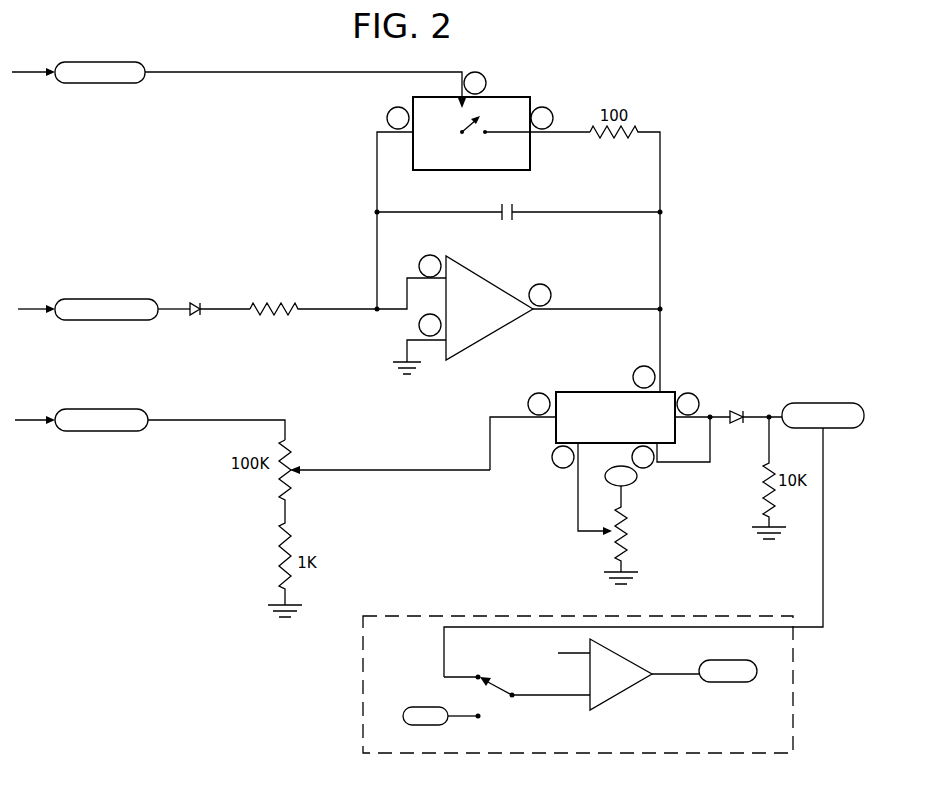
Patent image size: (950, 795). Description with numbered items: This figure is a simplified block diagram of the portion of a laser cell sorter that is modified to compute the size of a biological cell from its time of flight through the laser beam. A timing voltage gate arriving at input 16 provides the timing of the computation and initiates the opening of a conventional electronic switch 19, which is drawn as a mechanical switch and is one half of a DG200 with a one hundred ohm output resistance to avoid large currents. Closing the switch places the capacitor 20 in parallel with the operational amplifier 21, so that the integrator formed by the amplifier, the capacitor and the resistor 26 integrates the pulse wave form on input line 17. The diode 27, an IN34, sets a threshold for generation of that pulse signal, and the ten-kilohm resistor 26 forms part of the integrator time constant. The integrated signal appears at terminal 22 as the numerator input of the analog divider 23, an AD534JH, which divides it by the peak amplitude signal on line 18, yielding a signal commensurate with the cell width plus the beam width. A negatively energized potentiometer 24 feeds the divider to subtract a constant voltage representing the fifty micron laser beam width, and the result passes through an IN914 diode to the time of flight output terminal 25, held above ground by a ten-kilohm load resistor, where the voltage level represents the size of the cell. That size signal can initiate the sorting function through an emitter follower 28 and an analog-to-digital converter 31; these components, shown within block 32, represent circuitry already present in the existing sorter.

The input 16 is at (27, 70).
The input line 17 is at (30, 308).
The line 18 is at (28, 418).
The electronic switch 19 is at (497, 97).
The capacitor 20 is at (512, 222).
The operational amplifier 21 is at (503, 330).
The terminal 22 is at (608, 385).
The analog divider 23 is at (737, 424).
The potentiometer 24 is at (638, 500).
The time of flight output terminal 25 is at (820, 398).
The resistor 26 is at (273, 325).
The diode 27 is at (192, 327).
The emitter follower 28 is at (628, 649).
The analog-to-digital converter 31 is at (722, 657).
The block 32 is at (797, 650).